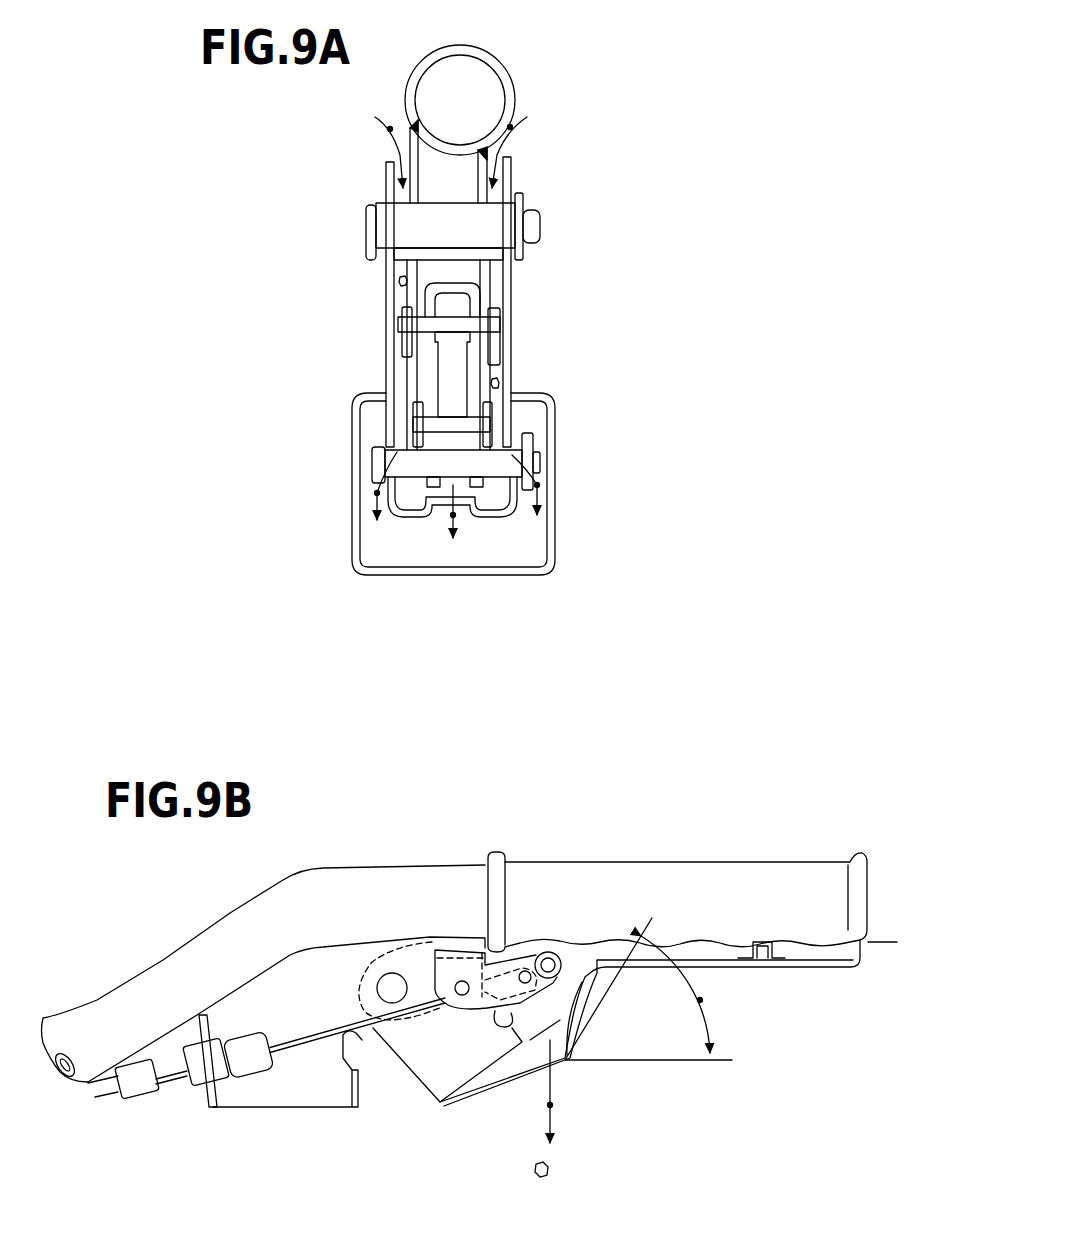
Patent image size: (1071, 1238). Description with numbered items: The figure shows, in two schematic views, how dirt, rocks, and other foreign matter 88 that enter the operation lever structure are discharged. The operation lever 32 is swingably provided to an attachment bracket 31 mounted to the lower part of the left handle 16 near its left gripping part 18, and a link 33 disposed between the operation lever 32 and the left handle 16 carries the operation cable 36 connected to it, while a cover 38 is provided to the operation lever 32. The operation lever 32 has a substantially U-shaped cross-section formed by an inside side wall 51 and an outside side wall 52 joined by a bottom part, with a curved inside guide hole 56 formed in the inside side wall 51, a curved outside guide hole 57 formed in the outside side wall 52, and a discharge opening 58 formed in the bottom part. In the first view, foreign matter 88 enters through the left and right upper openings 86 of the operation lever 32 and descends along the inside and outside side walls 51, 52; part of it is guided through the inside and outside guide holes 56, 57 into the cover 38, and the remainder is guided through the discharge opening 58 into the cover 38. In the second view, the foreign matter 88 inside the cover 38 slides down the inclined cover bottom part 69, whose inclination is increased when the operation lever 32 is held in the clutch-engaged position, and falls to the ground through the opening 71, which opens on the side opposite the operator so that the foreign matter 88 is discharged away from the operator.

In FIG. 9B, the left handle 16 is at (373, 888).
In FIG. 9B, the left gripping part 18 is at (715, 870).
In FIG. 9B, the attachment bracket 31 is at (237, 1110).
In FIG. 9A, the operation lever 32 is at (512, 283).
In FIG. 9B, the operation lever 32 is at (413, 1085).
In FIG. 9B, the link 33 is at (458, 950).
In FIG. 9B, the operation cable 36 is at (302, 1045).
In FIG. 9A, the cover 38 is at (555, 493).
In FIG. 9B, the cover 38 is at (603, 993).
In FIG. 9A, the inside side wall 51 is at (502, 325).
In FIG. 9A, the outside side wall 52 is at (390, 338).
In FIG. 9A, the inside guide hole 56 is at (517, 453).
In FIG. 9A, the outside guide hole 57 is at (393, 467).
In FIG. 9A, the discharge opening 58 is at (440, 513).
In FIG. 9B, the discharge opening 58 is at (490, 1027).
In FIG. 9B, the cover bottom part 69 is at (583, 1030).
In FIG. 9B, the opening 71 is at (553, 1043).
In FIG. 9A, the upper openings 86 is at (530, 222).
In FIG. 9A, the foreign matter 88 is at (498, 383).
In FIG. 9B, the foreign matter 88 is at (548, 1173).